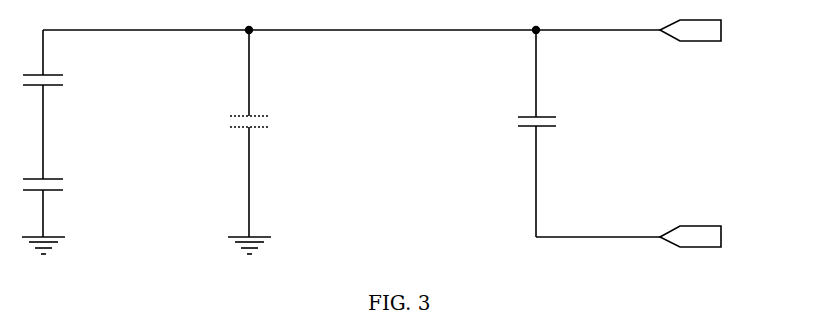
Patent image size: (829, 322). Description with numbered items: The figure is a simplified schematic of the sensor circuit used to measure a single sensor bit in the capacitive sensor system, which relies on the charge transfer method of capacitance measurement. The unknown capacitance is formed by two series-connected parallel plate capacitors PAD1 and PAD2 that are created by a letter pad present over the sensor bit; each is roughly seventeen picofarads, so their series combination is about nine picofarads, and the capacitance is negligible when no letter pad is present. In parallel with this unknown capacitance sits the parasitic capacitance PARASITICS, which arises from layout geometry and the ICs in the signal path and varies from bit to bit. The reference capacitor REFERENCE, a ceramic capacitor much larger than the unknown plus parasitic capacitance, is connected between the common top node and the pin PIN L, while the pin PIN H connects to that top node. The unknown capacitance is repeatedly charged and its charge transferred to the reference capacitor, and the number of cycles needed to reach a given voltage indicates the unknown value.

The first pad capacitor PAD1 is at (73, 81).
The second pad capacitor PAD2 is at (73, 184).
The parasitic capacitance PARASITICS is at (303, 133).
The reference capacitor REFERENCE is at (592, 133).
The high pin PIN H is at (713, 30).
The low pin PIN L is at (712, 236).